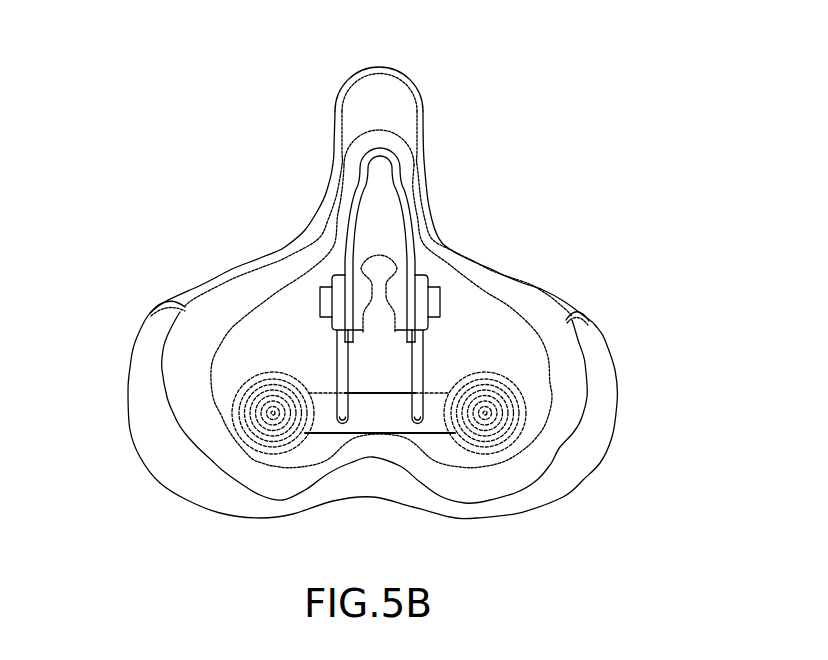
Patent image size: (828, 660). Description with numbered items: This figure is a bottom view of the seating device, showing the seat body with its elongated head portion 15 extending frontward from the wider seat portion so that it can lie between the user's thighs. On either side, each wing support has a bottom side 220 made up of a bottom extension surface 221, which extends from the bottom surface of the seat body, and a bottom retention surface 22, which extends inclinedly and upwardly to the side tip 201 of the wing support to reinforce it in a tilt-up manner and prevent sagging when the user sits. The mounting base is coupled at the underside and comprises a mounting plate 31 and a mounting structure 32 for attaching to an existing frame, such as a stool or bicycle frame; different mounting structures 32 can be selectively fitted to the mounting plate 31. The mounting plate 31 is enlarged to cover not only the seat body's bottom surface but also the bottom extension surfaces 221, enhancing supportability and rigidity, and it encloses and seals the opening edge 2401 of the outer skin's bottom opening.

The head portion 15 is at (403, 112).
The mounting structure 32 is at (401, 259).
The mounting plate 31 is at (487, 337).
The bottom extension surface 221 is at (538, 327).
The opening edge 2401 is at (590, 356).
The side tip 201 is at (106, 424).
The bottom retention surface 22 is at (183, 460).
The bottom side 220 is at (580, 506).